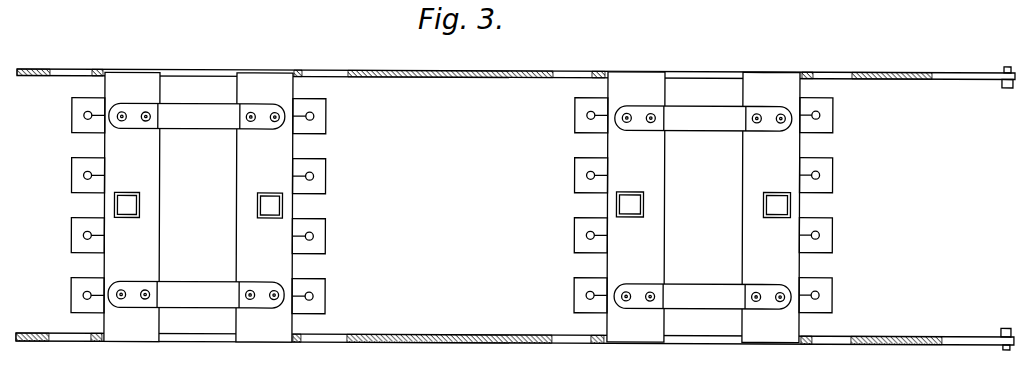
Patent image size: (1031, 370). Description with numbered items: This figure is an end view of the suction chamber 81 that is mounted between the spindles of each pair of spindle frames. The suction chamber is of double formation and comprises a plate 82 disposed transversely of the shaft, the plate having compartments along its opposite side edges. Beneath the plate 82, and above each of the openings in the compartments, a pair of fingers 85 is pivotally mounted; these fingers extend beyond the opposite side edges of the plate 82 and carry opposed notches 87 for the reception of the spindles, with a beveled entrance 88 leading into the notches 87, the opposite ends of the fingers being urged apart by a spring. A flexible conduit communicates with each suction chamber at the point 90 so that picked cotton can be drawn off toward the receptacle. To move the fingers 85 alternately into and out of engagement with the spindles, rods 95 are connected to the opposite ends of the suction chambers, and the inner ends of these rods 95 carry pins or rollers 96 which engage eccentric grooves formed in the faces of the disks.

The suction chamber 81 is at (247, 147).
The plate 82 is at (450, 192).
The fingers 85 is at (72, 125).
The notches 87 is at (95, 235).
The beveled entrance 88 is at (70, 185).
The communication point 90 is at (124, 191).
The rods 95 is at (903, 69).
The pins or rollers 96 is at (1006, 84).